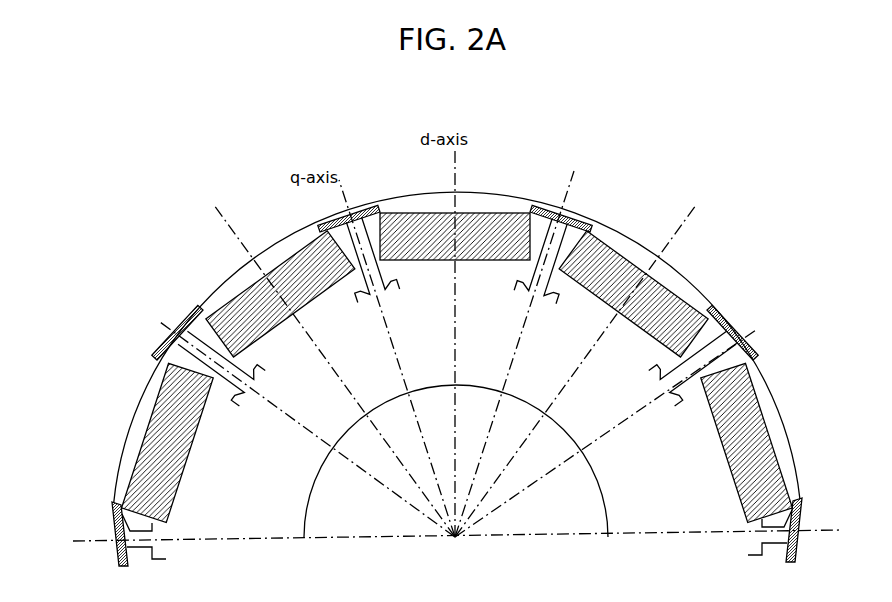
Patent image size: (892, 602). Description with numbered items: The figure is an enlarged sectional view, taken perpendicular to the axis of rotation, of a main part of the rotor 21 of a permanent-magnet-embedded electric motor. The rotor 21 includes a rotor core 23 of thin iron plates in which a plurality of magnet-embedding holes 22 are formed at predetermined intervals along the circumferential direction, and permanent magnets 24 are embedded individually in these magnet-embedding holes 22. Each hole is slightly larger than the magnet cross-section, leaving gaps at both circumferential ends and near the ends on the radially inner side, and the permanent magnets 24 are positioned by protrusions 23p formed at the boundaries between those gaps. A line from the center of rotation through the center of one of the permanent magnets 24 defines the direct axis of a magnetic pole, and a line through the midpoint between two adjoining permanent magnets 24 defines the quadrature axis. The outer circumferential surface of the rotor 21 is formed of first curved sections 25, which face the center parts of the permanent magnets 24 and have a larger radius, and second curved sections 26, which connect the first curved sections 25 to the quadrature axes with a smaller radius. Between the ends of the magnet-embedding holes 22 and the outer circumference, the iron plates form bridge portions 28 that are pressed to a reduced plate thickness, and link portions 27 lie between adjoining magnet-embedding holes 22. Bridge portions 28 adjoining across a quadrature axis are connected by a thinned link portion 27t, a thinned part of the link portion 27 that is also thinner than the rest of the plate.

The rotor 21 is at (730, 257).
The magnet-embedding hole 22 is at (188, 345).
The rotor core 23 is at (642, 380).
The protrusion 23p is at (116, 508).
The permanent magnet 24 is at (168, 437).
The first curved section 25 is at (408, 199).
The second curved section 26 is at (366, 204).
The link portion 27 is at (548, 213).
The thinned link portion 27t is at (576, 224).
The bridge portion 28 is at (540, 204).